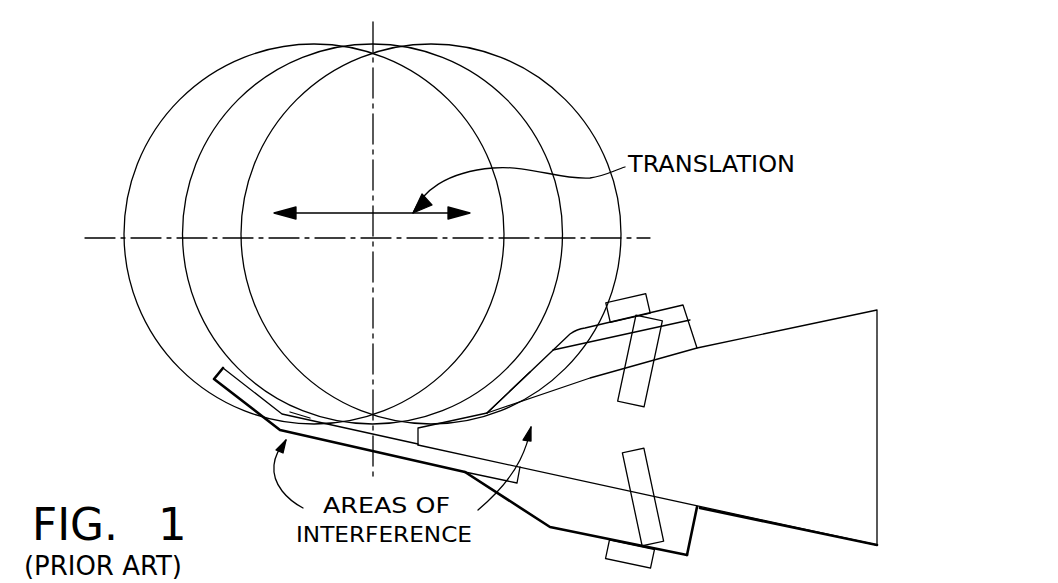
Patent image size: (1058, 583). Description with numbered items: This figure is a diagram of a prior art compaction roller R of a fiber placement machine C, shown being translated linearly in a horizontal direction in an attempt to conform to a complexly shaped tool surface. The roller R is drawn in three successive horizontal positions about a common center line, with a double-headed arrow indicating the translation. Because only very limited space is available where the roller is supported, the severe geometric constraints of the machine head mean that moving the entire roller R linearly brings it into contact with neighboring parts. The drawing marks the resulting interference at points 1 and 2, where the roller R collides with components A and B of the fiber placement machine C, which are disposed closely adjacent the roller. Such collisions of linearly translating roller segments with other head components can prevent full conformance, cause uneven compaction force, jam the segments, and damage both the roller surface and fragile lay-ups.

The roller R is at (202, 80).
The point of interference 1 is at (303, 418).
The point of interference 2 is at (537, 388).
The component A is at (337, 446).
The component B is at (775, 333).
The fiber placement machine C is at (766, 527).